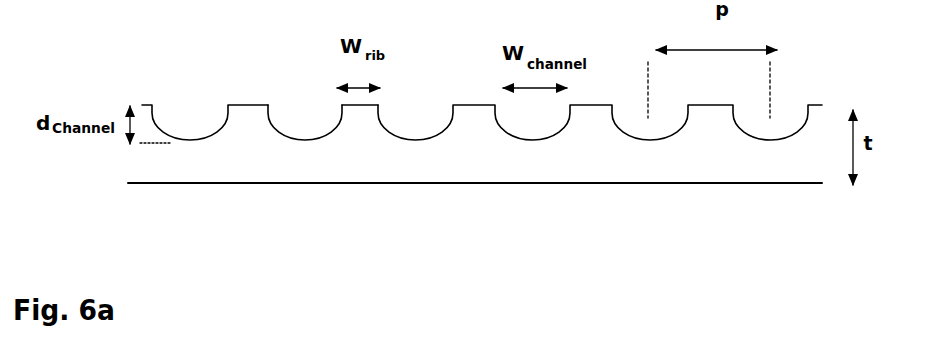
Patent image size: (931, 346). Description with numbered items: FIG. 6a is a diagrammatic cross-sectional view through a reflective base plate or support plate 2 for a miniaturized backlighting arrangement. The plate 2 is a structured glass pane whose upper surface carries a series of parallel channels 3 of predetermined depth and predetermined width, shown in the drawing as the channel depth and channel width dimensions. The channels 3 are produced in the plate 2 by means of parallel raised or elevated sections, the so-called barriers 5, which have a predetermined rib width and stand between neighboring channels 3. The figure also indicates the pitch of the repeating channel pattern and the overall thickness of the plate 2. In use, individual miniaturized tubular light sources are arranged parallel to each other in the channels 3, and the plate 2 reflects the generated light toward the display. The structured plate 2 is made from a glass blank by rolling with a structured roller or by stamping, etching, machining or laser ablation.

The plate 2 is at (463, 167).
The channels 3 is at (305, 136).
The barriers 5 is at (373, 136).